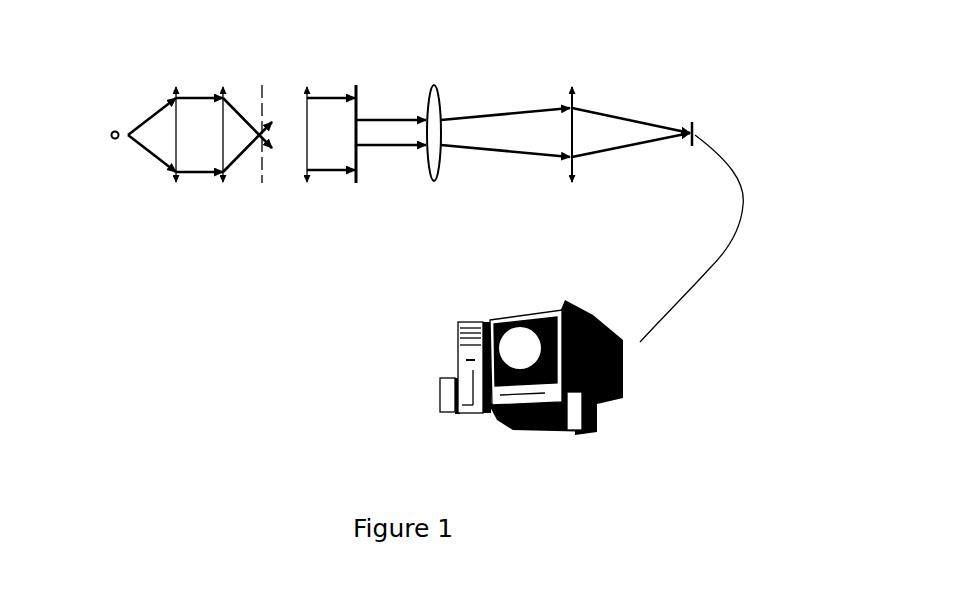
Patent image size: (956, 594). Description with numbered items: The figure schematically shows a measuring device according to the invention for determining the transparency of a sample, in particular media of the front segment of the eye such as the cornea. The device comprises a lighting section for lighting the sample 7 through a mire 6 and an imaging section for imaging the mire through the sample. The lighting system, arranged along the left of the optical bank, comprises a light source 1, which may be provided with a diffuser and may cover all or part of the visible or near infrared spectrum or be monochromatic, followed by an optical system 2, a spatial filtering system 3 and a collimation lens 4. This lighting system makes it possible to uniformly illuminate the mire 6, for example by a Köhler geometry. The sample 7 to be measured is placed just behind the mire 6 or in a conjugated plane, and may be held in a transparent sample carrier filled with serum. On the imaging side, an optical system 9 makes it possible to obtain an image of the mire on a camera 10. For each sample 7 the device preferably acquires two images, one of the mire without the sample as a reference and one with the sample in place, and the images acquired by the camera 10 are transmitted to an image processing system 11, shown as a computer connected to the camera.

The light source 1 is at (110, 140).
The optical system 2 is at (175, 88).
The spatial filtering system 3 is at (260, 187).
The collimation lens 4 is at (300, 70).
The mire 6 is at (352, 187).
The sample 7 is at (442, 83).
The optical system 9 is at (578, 82).
The camera 10 is at (698, 118).
The image processing system 11 is at (425, 378).